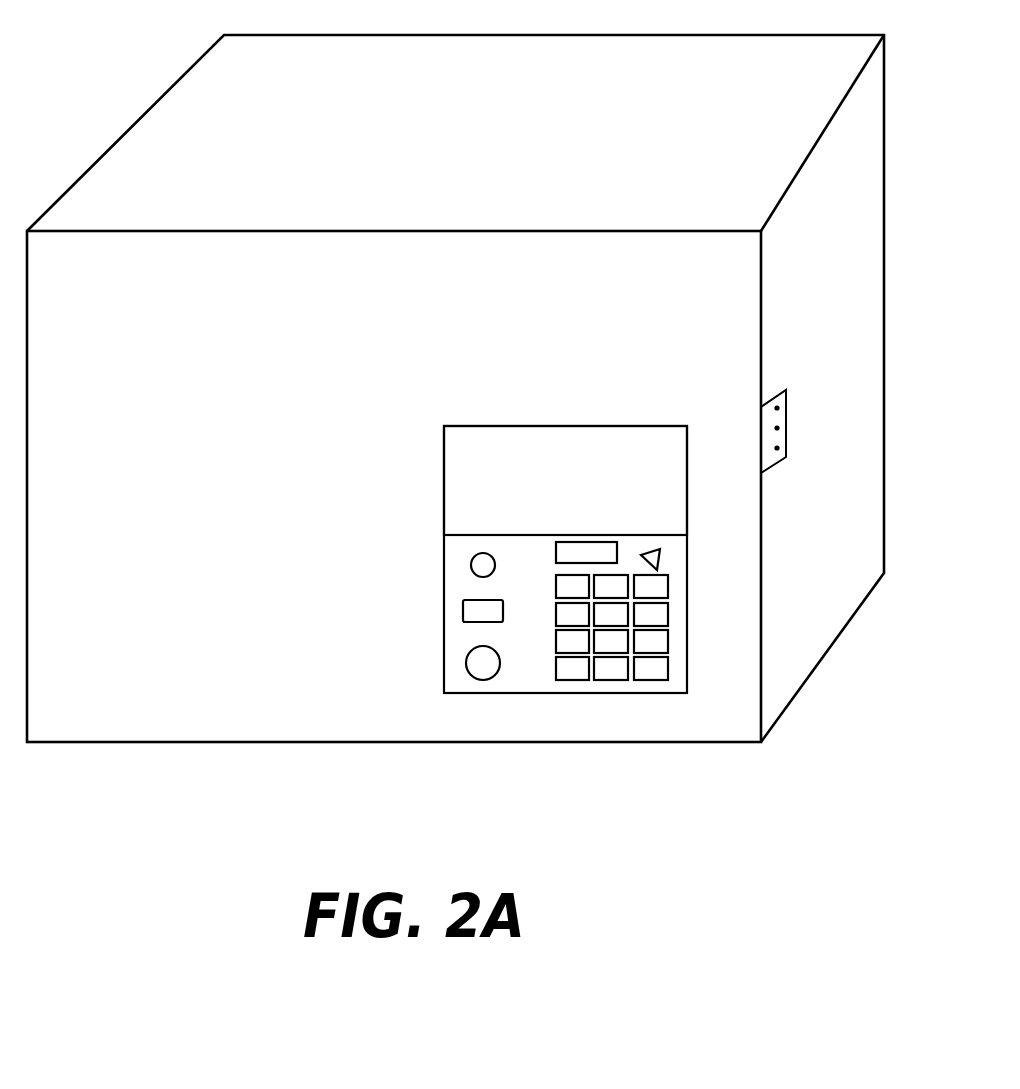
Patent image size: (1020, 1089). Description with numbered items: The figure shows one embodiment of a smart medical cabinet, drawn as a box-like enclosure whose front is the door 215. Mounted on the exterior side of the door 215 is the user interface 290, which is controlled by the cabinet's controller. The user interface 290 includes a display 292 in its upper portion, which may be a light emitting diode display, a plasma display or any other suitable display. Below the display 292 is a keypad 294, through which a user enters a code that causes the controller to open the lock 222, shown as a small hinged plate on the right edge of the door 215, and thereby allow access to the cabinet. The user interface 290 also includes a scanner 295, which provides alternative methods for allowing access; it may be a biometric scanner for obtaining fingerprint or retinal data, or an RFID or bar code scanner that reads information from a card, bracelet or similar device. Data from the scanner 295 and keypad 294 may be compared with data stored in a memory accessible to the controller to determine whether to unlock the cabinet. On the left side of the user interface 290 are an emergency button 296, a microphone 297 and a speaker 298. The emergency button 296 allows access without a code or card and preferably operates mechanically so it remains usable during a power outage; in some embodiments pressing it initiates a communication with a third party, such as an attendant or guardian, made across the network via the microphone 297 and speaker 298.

The door 215 is at (203, 718).
The lock 222 is at (787, 422).
The user interface 290 is at (592, 714).
The display 292 is at (593, 447).
The keypad 294 is at (660, 552).
The scanner 295 is at (609, 548).
The emergency button 296 is at (471, 564).
The microphone 297 is at (463, 611).
The speaker 298 is at (466, 663).